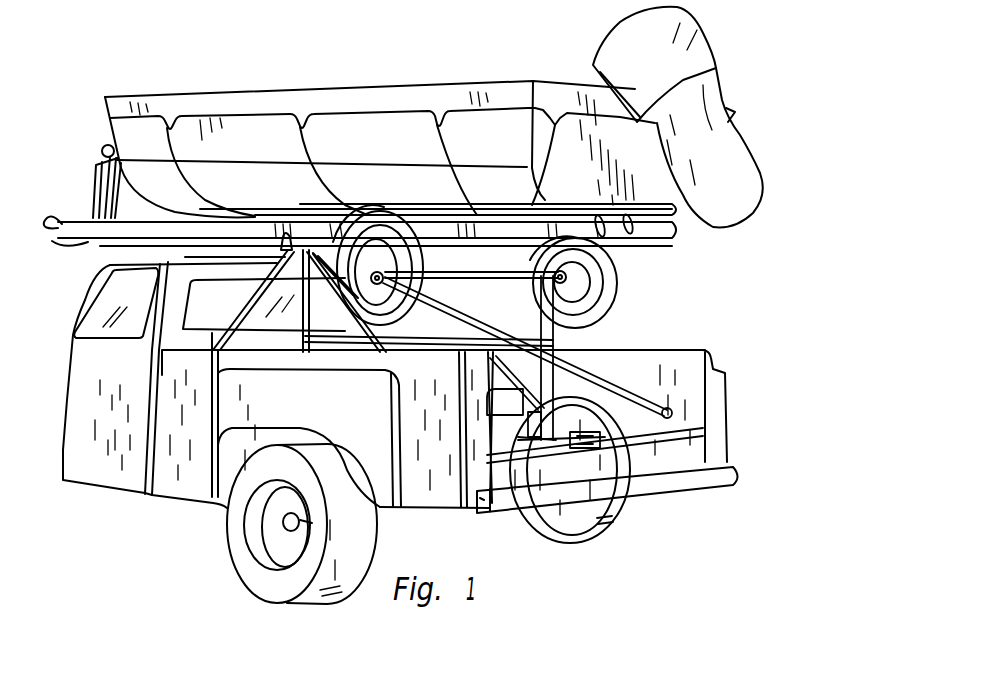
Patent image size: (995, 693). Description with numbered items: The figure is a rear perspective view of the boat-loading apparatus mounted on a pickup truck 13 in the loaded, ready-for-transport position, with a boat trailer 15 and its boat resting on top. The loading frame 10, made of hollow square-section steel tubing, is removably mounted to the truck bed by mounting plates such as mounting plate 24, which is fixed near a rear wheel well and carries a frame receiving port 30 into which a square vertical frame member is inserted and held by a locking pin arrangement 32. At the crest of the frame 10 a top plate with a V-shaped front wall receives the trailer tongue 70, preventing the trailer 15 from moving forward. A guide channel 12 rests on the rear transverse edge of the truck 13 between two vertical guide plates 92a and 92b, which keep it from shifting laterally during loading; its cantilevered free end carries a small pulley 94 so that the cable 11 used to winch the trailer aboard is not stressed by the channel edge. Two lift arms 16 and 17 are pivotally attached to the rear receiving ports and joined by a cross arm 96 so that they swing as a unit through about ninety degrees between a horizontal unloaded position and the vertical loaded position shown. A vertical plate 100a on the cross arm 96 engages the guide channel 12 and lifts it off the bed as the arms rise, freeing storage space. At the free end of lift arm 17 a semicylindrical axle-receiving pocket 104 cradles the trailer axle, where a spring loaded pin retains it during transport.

The loading frame 10 is at (227, 292).
The cable 11 is at (295, 318).
The guide channel 12 is at (560, 348).
The pickup truck 13 is at (162, 499).
The boat trailer 15 is at (88, 217).
The lift arm 16 is at (420, 350).
The lift arm 17 is at (608, 310).
The mounting plate 24 is at (560, 513).
The frame receiving port 30 is at (522, 505).
The locking pin arrangement 32 is at (600, 527).
The trailer tongue 70 is at (114, 240).
The guide plate 92a is at (652, 482).
The guide plate 92b is at (645, 468).
The pulley 94 is at (690, 416).
The cross arm 96 is at (540, 337).
The vertical plate 100a is at (455, 305).
The axle-receiving pocket 104 is at (522, 257).